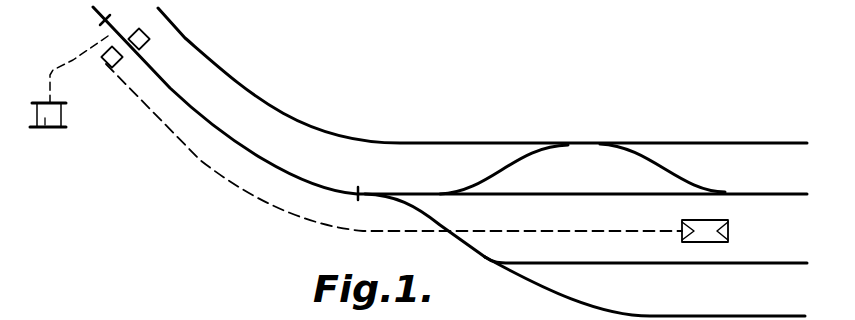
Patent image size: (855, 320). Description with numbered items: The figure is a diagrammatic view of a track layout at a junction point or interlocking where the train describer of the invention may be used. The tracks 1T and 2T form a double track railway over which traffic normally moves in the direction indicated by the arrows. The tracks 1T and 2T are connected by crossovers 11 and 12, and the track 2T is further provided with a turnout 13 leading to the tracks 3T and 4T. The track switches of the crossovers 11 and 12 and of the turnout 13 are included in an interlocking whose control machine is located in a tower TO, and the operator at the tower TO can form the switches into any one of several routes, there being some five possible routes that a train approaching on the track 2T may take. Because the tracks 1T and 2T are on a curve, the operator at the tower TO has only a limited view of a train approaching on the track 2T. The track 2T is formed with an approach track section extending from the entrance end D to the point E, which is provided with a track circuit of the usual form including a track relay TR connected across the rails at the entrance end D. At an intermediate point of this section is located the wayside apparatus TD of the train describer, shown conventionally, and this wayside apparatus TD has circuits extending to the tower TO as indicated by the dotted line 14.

The track 1T is at (759, 141).
The track 2T is at (788, 192).
The track 3T is at (793, 262).
The track 4T is at (792, 315).
The crossover 11 is at (497, 168).
The crossover 12 is at (658, 166).
The turnout 13 is at (434, 221).
The dotted line 14 is at (283, 208).
The entrance end D is at (93, 28).
The end of approach track section E is at (355, 206).
The wayside apparatus TD is at (103, 57).
The track relay TR is at (43, 129).
The tower TO is at (728, 226).